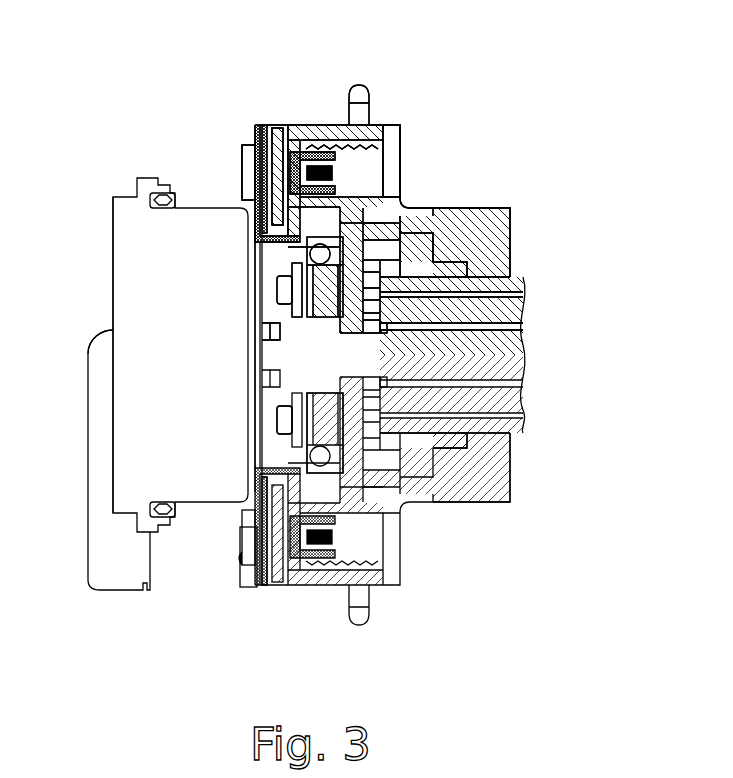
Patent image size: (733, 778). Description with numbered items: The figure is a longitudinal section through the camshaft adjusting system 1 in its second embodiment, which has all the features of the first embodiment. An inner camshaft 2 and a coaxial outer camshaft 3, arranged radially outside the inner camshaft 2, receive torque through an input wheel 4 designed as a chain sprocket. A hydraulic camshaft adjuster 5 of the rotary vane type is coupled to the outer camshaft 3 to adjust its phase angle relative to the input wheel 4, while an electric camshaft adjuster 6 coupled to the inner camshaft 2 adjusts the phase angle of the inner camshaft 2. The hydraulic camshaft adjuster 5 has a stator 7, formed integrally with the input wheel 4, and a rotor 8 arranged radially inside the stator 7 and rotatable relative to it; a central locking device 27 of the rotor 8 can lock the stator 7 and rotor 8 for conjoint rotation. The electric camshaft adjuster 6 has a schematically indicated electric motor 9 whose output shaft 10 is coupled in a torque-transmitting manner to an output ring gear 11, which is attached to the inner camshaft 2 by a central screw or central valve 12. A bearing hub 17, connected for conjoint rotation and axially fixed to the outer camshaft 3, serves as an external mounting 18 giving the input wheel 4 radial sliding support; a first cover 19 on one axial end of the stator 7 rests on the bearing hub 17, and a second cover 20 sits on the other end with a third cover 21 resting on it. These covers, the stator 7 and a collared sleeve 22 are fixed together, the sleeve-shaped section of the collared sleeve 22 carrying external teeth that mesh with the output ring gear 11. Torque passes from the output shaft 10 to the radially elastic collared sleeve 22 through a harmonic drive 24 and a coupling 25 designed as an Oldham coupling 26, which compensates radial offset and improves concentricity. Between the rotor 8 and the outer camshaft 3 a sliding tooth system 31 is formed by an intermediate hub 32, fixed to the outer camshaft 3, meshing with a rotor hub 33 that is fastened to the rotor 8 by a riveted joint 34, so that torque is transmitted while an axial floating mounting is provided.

The camshaft adjusting system 1 is at (523, 140).
The inner camshaft 2 is at (507, 313).
The outer camshaft 3 is at (507, 284).
The input wheel 4 is at (372, 145).
The hydraulic camshaft adjuster 5 is at (415, 137).
The electric camshaft adjuster 6 is at (178, 186).
The stator 7 is at (382, 220).
The rotor 8 is at (396, 200).
The electric motor 9 is at (193, 253).
The output shaft 10 is at (275, 355).
The output ring gear 11 is at (340, 520).
The central screw/central valve 12 is at (507, 362).
The bearing hub 17 is at (484, 228).
The external mounting 18 is at (471, 242).
The first cover 19 is at (392, 150).
The second cover 20 is at (292, 140).
The third cover 21 is at (266, 125).
The collared sleeve 22 is at (292, 500).
The harmonic drive 24 is at (300, 440).
The coupling 25 is at (272, 287).
The Oldham coupling 26 is at (248, 557).
The central locking device 27 is at (337, 170).
The sliding tooth system 31 is at (452, 289).
The intermediate hub 32 is at (482, 255).
The rotor hub 33 is at (410, 234).
The riveted joint 34 is at (427, 255).